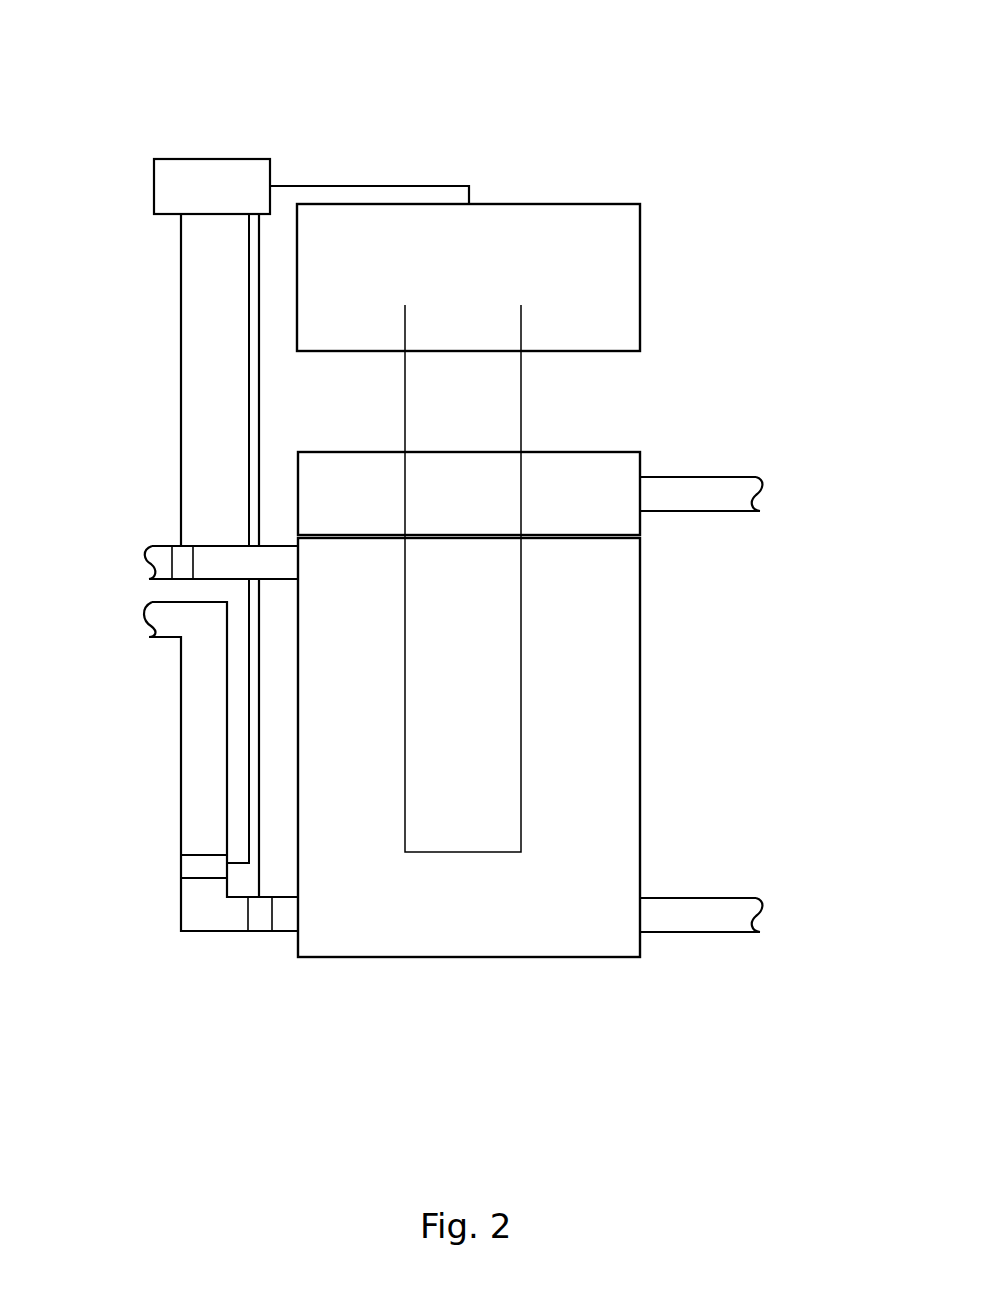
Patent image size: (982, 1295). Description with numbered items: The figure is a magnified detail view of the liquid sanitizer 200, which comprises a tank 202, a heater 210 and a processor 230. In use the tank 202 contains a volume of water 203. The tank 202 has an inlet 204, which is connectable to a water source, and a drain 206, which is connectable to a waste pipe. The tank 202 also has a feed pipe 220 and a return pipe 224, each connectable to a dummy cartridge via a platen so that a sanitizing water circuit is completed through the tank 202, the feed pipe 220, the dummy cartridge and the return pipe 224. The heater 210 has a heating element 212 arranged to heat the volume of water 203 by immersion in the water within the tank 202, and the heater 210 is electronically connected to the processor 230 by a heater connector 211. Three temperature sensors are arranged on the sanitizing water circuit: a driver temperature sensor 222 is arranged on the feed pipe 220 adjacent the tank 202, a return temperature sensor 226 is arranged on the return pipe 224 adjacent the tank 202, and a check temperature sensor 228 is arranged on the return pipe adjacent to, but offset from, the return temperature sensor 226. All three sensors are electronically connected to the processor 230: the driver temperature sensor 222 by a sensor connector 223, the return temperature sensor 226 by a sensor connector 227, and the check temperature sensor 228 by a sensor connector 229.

The liquid sanitizer 200 is at (312, 95).
The tank 202 is at (640, 722).
The volume of water 203 is at (443, 933).
The inlet 204 is at (700, 475).
The drain 206 is at (700, 897).
The heater 210 is at (640, 277).
The heater connector 211 is at (452, 185).
The heating element 212 is at (525, 705).
The feed pipe 220 is at (217, 545).
The driver temperature sensor 222 is at (180, 557).
The sensor connector 223 is at (179, 399).
The return pipe 224 is at (288, 918).
The return temperature sensor 226 is at (262, 917).
The sensor connector 227 is at (258, 385).
The check temperature sensor 228 is at (190, 865).
The sensor connector 229 is at (247, 296).
The processor 230 is at (171, 178).